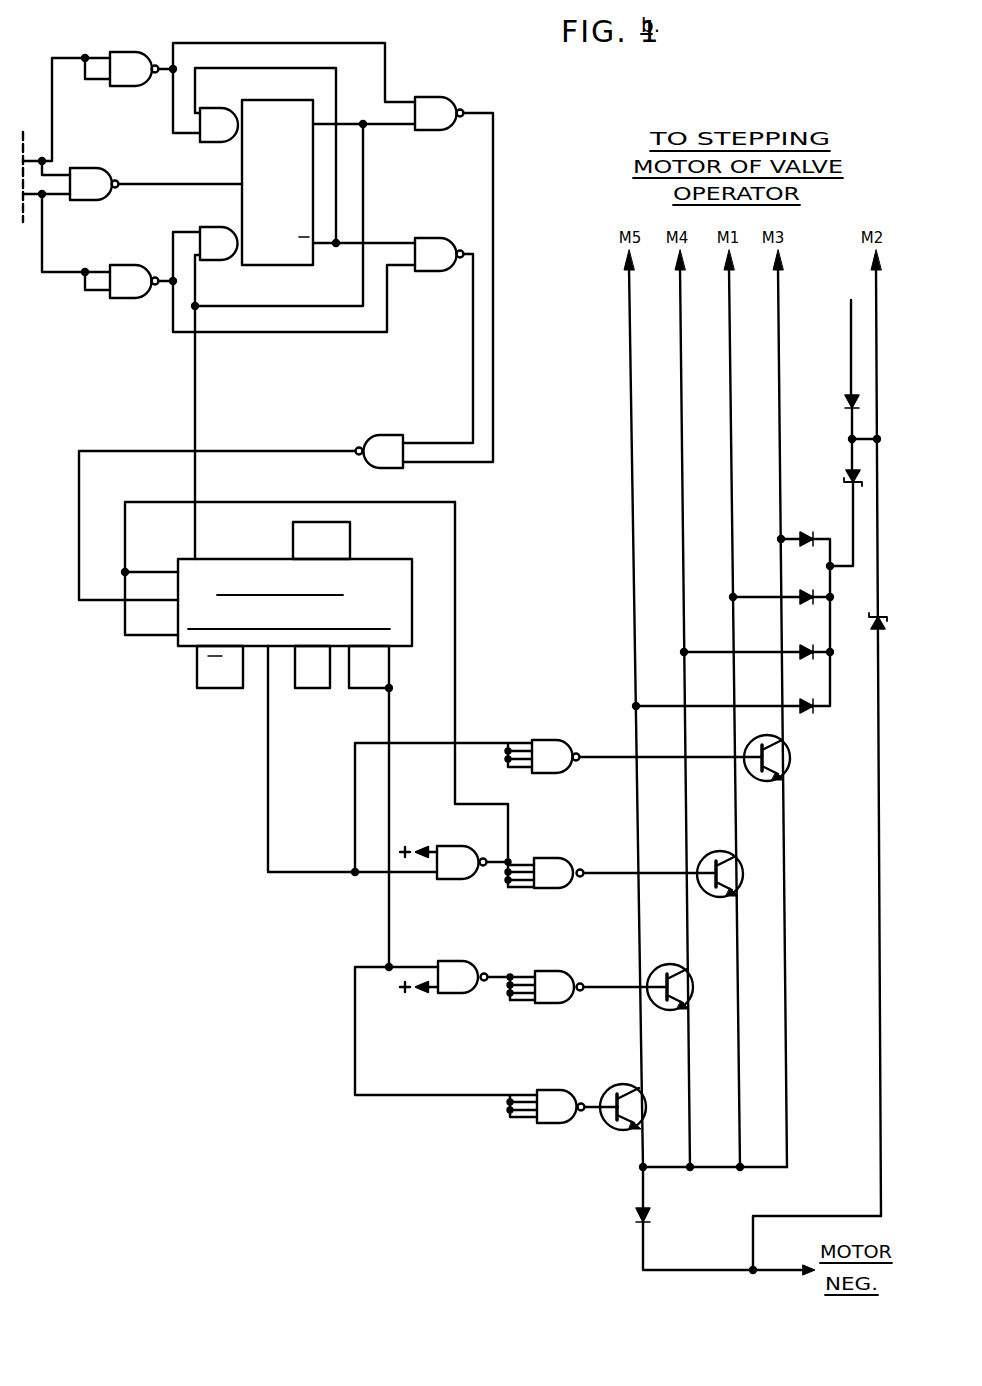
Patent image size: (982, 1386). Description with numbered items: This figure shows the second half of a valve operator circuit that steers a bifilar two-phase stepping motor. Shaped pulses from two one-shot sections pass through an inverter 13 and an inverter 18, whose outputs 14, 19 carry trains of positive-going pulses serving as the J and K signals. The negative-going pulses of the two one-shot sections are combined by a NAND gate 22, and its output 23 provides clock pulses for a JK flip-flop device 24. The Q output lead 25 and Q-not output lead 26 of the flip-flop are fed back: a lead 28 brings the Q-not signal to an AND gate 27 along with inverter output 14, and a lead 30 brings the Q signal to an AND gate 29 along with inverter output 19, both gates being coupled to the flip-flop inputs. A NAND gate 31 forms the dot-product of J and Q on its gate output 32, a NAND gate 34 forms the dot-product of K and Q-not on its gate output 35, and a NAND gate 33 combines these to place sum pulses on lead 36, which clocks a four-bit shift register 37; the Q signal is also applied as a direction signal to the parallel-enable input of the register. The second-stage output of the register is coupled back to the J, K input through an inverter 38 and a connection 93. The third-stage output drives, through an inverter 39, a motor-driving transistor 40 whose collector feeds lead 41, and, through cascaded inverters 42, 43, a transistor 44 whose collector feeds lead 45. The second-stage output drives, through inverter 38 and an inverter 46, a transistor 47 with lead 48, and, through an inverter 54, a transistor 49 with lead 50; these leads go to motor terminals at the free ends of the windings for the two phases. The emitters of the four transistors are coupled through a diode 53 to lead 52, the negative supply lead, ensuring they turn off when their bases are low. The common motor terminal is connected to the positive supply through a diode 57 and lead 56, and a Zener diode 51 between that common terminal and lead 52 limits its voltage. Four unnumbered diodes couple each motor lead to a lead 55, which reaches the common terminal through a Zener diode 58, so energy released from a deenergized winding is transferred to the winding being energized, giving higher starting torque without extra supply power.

The inverter 13 is at (123, 58).
The inverter output 14 is at (172, 100).
The inverter 18 is at (126, 300).
The inverter output 19 is at (172, 250).
The NAND gate 22 is at (92, 167).
The output of NAND gate 22 23 is at (143, 183).
The flip-flop device 24 is at (289, 163).
The Q output lead 25 is at (345, 123).
The Q-not output lead 26 is at (350, 246).
The AND gate 27 is at (213, 108).
The lead 28 is at (305, 69).
The AND gate 29 is at (210, 227).
The lead 30 is at (247, 306).
The NAND gate 31 is at (433, 97).
The gate output 32 is at (493, 180).
The NAND gate 33 is at (383, 435).
The NAND gate 34 is at (430, 238).
The gate output 35 is at (473, 312).
The lead 36 is at (268, 450).
The four-bit shift register 37 is at (413, 567).
The inverter 38 is at (450, 846).
The inverter 39 is at (545, 1090).
The motor-driving transistor 40 is at (620, 1085).
The lead 41 is at (637, 943).
The inverter 42 is at (450, 961).
The inverter 43 is at (550, 971).
The motor-driving transistor 44 is at (665, 965).
The lead 45 is at (685, 837).
The inverter 46 is at (548, 858).
The motor-driving transistor 47 is at (712, 852).
The lead 48 is at (735, 735).
The motor-driving transistor 49 is at (764, 782).
The lead 50 is at (781, 680).
The Zener diode 51 is at (874, 626).
The lead 52 is at (700, 1270).
The diode 53 is at (635, 1213).
The inverter 54 is at (548, 740).
The lead 55 is at (835, 706).
The lead 56 is at (851, 307).
The diode 57 is at (846, 401).
The Zener diode 58 is at (843, 478).
The connection 93 is at (456, 652).